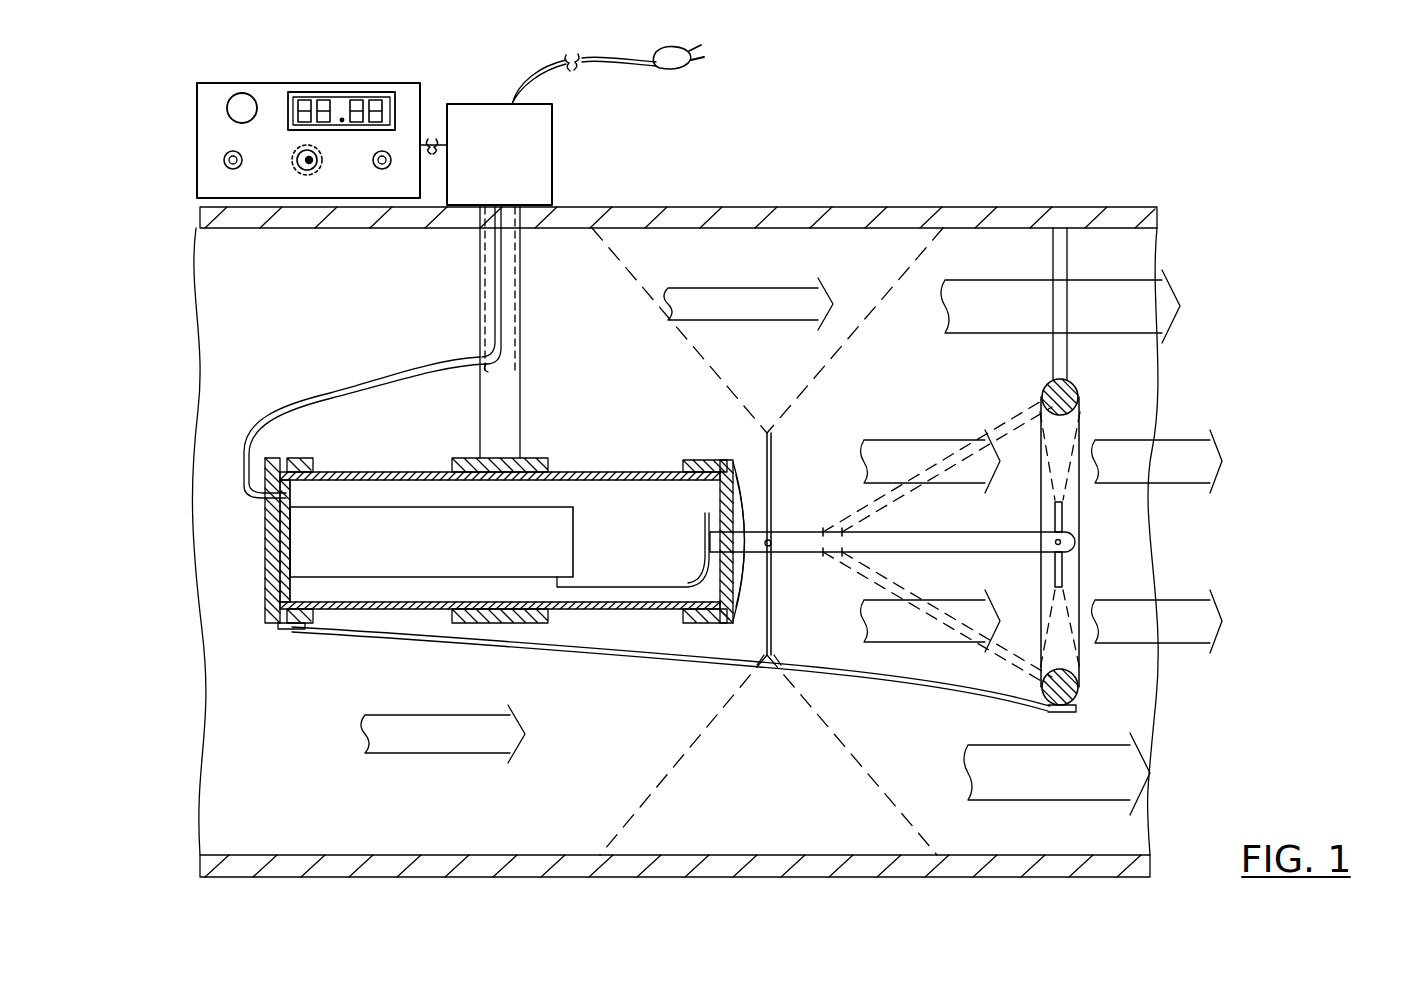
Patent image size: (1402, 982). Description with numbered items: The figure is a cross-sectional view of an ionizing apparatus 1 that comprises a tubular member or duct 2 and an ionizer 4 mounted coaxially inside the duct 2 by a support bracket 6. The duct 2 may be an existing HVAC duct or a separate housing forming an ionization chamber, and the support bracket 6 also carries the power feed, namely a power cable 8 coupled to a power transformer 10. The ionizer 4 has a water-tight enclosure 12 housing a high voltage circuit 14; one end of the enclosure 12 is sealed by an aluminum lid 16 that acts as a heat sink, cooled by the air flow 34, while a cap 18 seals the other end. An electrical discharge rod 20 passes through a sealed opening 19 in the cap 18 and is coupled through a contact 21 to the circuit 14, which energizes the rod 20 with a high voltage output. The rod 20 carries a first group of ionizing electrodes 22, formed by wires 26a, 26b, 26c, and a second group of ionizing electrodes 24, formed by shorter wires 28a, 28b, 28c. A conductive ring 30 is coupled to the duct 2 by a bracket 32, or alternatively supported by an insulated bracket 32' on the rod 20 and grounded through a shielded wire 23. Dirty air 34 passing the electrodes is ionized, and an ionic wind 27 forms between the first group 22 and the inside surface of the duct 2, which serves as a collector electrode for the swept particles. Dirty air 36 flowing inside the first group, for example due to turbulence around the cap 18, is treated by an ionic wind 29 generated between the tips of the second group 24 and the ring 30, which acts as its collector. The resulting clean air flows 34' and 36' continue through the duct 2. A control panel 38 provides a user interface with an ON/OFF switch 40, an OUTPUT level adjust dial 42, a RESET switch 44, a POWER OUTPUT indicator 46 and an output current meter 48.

The ionizing apparatus 1 is at (873, 183).
The tubular member 2 is at (1046, 207).
The ionizer 4 is at (647, 461).
The support bracket 6 is at (518, 400).
The power cable 8 is at (316, 394).
The power transformer 10 is at (553, 145).
The water-tight enclosure 12 is at (578, 474).
The high voltage circuit 14 is at (575, 540).
The aluminum lid 16 is at (262, 612).
The cap 18 is at (700, 461).
The sealed opening 19 is at (748, 586).
The electrical discharge rod 20 is at (892, 508).
The contact 21 is at (632, 586).
The first group of ionizing electrodes 22 is at (780, 531).
The shielded wire 23 is at (355, 640).
The second group of ionizing electrodes 24 is at (1056, 533).
The ionizing electrode wire 26a is at (772, 458).
The ionizing electrode wire 26b is at (768, 660).
The ionizing electrode wire 26c is at (770, 547).
The ionic wind 27 is at (857, 340).
The ionizing electrode wire 28a is at (1054, 512).
The ionizing electrode wire 28b is at (1064, 565).
The ionizing electrode wire 28c is at (1054, 547).
The ionic wind 29 is at (1083, 428).
The ring 30 is at (1076, 386).
The bracket 32 is at (1027, 304).
The insulated bracket 32' is at (937, 523).
The air flow 34 is at (597, 543).
The clean air flow 34' is at (1060, 535).
The dirty air 36 is at (903, 515).
The clean air flow 36' is at (1157, 514).
The control panel 38 is at (296, 116).
The ON/OFF switch 40 is at (223, 160).
The OUTPUT level adjust dial 42 is at (294, 163).
The RESET switch 44 is at (373, 163).
The POWER OUTPUT indicator 46 is at (227, 105).
The output current meter 48 is at (335, 92).